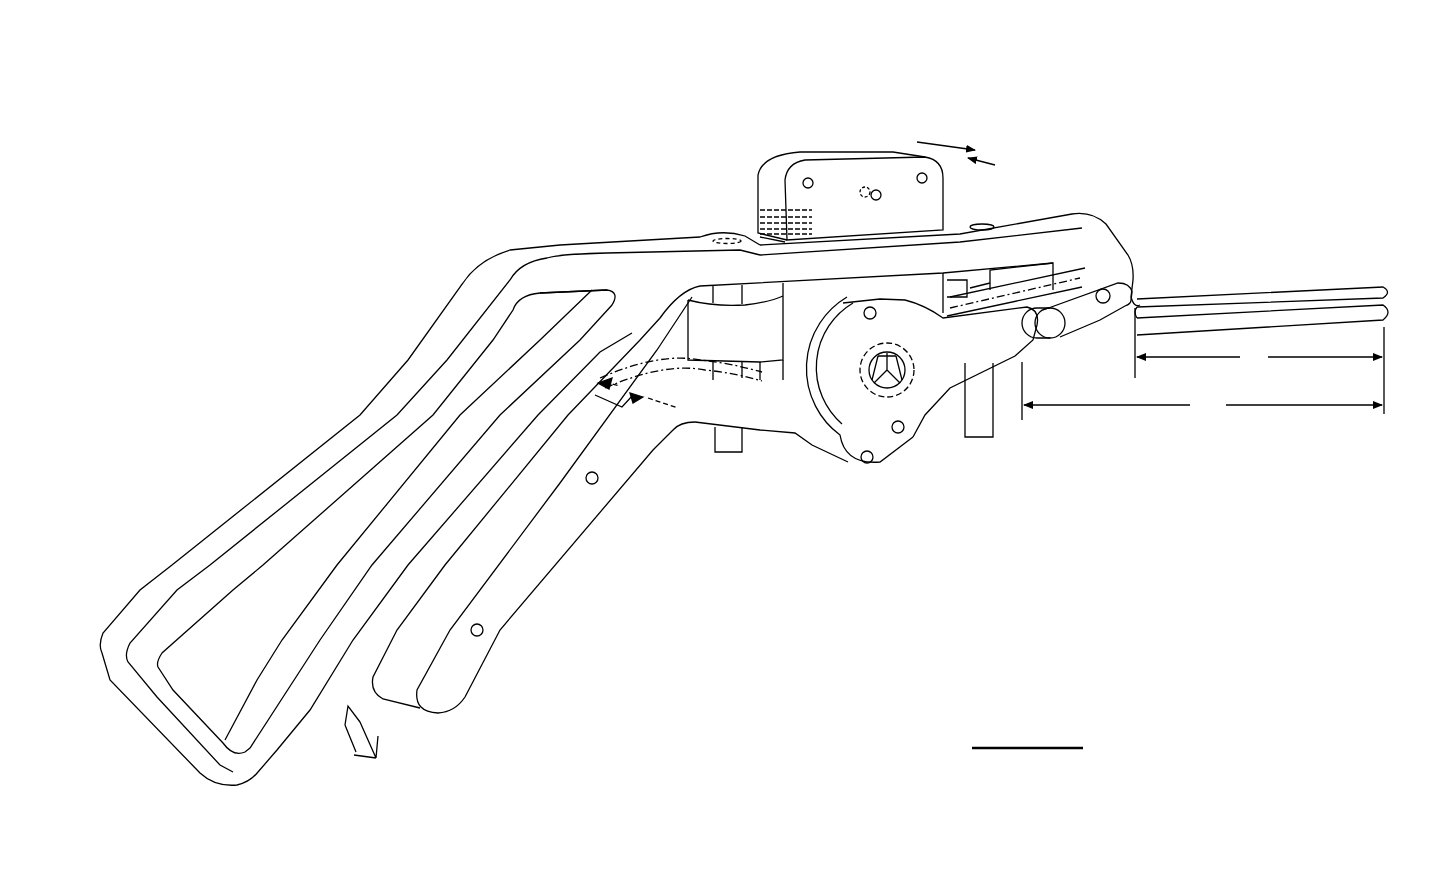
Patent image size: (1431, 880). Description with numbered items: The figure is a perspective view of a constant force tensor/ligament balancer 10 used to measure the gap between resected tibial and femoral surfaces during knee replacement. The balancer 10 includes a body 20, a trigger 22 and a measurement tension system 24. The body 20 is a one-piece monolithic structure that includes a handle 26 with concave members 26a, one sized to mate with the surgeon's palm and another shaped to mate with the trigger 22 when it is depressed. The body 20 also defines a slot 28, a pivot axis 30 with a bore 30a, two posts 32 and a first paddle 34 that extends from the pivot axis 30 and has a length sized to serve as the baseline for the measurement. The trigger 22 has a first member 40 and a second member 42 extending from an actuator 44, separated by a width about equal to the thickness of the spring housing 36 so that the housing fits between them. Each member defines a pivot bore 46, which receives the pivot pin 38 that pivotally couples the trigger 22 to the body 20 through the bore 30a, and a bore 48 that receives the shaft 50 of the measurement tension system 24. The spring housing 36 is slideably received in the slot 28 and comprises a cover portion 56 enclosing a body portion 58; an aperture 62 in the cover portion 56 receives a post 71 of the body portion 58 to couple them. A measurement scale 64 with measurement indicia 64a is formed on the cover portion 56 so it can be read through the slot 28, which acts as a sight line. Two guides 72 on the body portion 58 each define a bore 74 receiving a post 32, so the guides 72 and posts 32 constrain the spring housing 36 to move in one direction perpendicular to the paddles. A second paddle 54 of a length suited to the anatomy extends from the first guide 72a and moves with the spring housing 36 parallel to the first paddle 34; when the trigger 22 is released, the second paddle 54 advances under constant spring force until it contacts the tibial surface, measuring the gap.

The constant force tensor/ligament balancer 10 is at (603, 98).
The body 20 is at (468, 238).
The trigger 22 is at (642, 553).
The measurement tension system 24 is at (968, 188).
The handle 26 is at (190, 489).
The concave members 26a is at (216, 541).
The slot 28 is at (750, 236).
The pivot axis 30 is at (1133, 265).
The bore 30a is at (1140, 300).
The posts 32 is at (727, 447).
The first paddle 34 is at (1252, 285).
The spring housing 36 is at (843, 150).
The pivot pin 38 is at (1107, 302).
The first member 40 is at (636, 385).
The second member 42 is at (660, 428).
The actuator 44 is at (517, 573).
The pivot bore 46 is at (1103, 290).
The bore 48 is at (875, 397).
The shaft 50 is at (892, 386).
The second paddle 54 is at (1388, 305).
The cover portion 56 is at (894, 168).
The body portion 58 is at (800, 160).
The aperture 62 is at (863, 188).
The measurement scale 64 is at (820, 228).
The measurement indicia 64a is at (793, 213).
The post 71 is at (877, 200).
The guides 72 is at (697, 341).
The first guide 72a is at (1012, 292).
The bore 74 is at (747, 302).